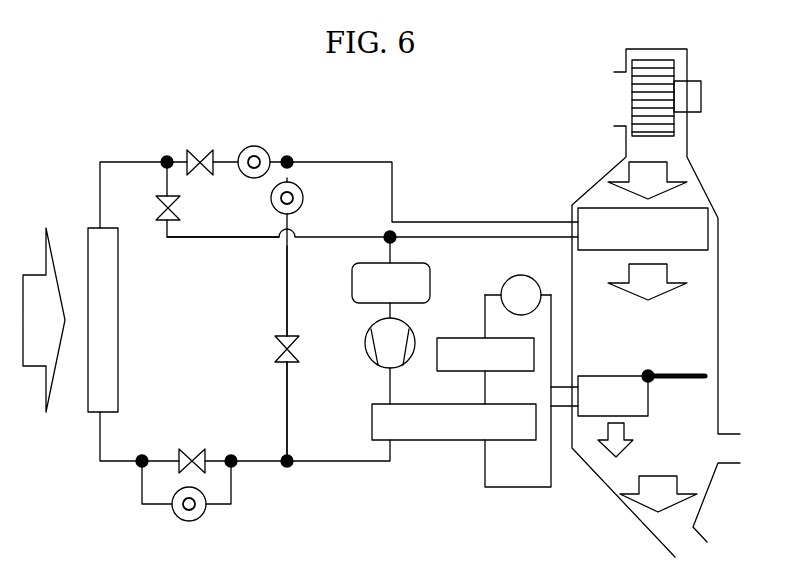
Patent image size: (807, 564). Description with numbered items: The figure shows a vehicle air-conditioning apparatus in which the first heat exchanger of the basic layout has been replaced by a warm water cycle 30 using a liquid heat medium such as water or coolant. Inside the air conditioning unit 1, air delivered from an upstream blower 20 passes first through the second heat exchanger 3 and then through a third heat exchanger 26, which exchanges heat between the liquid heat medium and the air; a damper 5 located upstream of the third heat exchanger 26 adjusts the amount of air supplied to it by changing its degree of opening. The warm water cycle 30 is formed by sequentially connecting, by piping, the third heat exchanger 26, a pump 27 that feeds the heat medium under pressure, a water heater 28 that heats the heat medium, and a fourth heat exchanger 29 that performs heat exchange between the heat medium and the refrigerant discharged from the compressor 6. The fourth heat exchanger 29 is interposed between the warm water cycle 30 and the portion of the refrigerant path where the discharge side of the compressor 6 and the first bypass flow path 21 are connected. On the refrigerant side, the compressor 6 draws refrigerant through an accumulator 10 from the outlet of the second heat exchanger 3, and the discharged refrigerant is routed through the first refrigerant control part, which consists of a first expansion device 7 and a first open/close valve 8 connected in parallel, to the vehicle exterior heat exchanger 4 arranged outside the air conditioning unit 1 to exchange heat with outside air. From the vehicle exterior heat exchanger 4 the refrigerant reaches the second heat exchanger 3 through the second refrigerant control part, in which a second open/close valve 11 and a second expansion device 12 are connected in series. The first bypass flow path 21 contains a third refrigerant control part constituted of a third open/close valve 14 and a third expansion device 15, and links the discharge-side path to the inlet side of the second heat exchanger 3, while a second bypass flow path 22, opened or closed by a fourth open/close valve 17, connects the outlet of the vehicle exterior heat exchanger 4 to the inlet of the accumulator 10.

The air conditioning unit 1 is at (720, 308).
The second heat exchanger 3 is at (710, 233).
The vehicle exterior heat exchanger 4 is at (119, 349).
The damper 5 is at (688, 373).
The compressor 6 is at (368, 331).
The first expansion device 7 is at (198, 518).
The first open/close valve 8 is at (193, 455).
The accumulator 10 is at (355, 273).
The second open/close valve 11 is at (203, 156).
The second expansion device 12 is at (250, 146).
The third open/close valve 14 is at (276, 348).
The third expansion device 15 is at (303, 200).
The fourth open/close valve 17 is at (181, 204).
The blower fan 20 is at (652, 62).
The first bypass flow path 21 is at (288, 413).
The second bypass flow path 22 is at (208, 240).
The third heat exchanger 26 is at (606, 376).
The pump 27 is at (518, 278).
The water heater 28 is at (460, 338).
The fourth heat exchanger 29 is at (440, 441).
The warm water cycle 30 is at (508, 488).